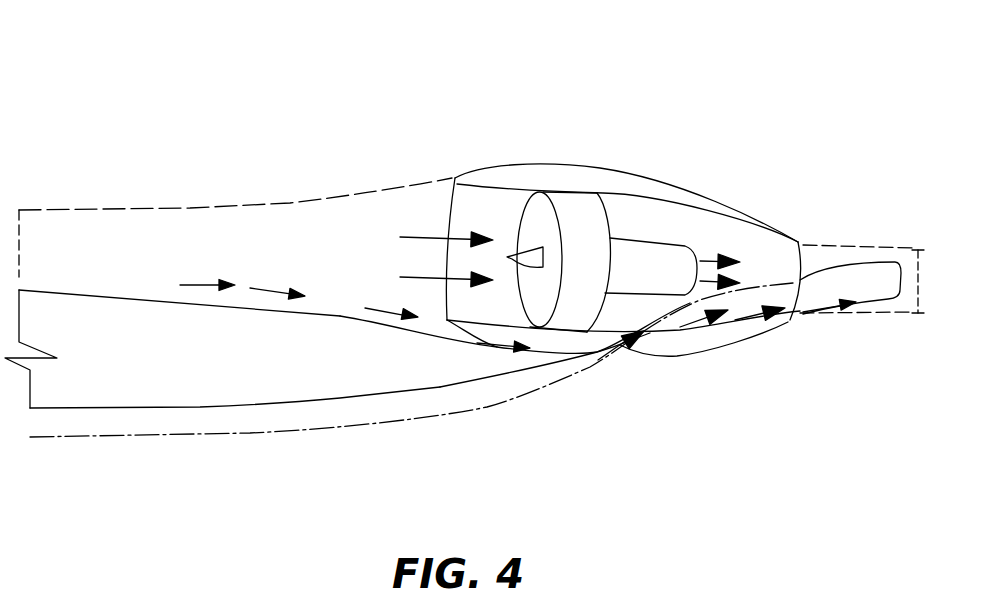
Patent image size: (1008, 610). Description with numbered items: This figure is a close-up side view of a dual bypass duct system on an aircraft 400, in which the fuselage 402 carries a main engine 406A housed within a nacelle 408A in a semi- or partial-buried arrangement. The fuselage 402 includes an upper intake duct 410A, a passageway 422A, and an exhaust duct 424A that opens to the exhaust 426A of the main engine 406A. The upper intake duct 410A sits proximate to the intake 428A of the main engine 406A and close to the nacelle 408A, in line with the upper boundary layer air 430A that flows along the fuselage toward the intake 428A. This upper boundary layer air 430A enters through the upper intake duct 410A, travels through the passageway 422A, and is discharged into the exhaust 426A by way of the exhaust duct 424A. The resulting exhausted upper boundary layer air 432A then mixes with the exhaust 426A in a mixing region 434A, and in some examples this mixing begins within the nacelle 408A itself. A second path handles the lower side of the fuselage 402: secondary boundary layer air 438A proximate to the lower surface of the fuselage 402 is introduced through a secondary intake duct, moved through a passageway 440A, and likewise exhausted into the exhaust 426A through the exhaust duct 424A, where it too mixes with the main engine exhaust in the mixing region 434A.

The aircraft 400 is at (188, 60).
The fuselage 402 is at (237, 355).
The main engine 406A is at (573, 207).
The nacelle 408A is at (620, 183).
The upper intake duct 410A is at (460, 365).
The passageway 422A is at (566, 368).
The exhaust duct 424A is at (662, 348).
The exhaust 426A is at (716, 232).
The intake 428A is at (422, 259).
The upper boundary layer air 430A is at (355, 318).
The exhausted upper boundary layer air 432A is at (745, 315).
The mixing region 434A is at (862, 290).
The secondary boundary layer air 438A is at (535, 400).
The passageway 440A is at (608, 358).